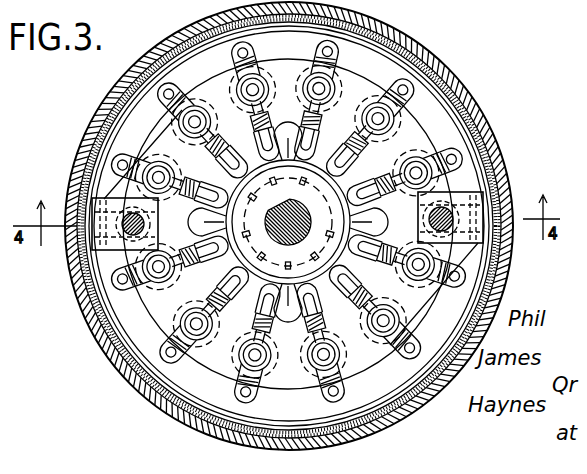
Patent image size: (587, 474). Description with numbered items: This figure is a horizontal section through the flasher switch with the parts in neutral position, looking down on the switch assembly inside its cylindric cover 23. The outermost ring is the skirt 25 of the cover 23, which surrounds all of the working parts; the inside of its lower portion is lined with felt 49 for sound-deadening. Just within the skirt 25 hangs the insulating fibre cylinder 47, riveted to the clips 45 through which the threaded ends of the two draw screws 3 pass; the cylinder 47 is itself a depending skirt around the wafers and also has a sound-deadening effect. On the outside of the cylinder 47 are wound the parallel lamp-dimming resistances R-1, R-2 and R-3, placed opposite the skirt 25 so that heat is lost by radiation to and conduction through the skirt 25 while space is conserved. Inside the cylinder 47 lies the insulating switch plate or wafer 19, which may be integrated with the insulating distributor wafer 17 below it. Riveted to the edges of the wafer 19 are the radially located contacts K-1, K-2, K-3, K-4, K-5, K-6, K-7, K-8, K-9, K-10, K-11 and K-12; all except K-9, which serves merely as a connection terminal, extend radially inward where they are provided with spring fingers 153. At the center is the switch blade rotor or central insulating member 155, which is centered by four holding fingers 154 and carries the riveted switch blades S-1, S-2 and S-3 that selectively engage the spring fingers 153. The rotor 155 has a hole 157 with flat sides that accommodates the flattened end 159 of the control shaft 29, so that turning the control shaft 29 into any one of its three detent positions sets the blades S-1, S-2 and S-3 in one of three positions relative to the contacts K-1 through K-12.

The cylindric container or cover 23 is at (143, 41).
The skirt 25 is at (113, 362).
The insulating distributor plate or wafer 17 is at (130, 118).
The insulating switch plate or wafer 19 is at (163, 131).
The insulating fibre cylinder 47 is at (440, 96).
The felt lining 49 is at (478, 118).
The lamp-dimming resistance R-1 is at (30, 95).
The lamp-dimming resistance R-2 is at (95, 128).
The lamp-dimming resistance R-3 is at (30, 122).
The contact K-1 is at (455, 160).
The contact K-2 is at (403, 95).
The contact K-3 is at (333, 51).
The contact K-4 is at (246, 51).
The contact K-5 is at (167, 96).
The contact K-6 is at (121, 166).
The contact K-7 is at (128, 285).
The contact K-8 is at (174, 350).
The contact K-9 is at (243, 392).
The contact K-10 is at (335, 393).
The contact K-11 is at (410, 349).
The contact K-12 is at (460, 274).
The spring fingers 153 is at (257, 130).
The holding fingers 154 is at (288, 326).
The switch blade rotor or central insulating member 155 is at (215, 310).
The hole 157 is at (291, 204).
The flattened end 159 is at (292, 241).
The control shaft 29 is at (268, 214).
The standards or draw screws 3 is at (290, 227).
The clips 45 is at (100, 251).
The switch blade S-1 is at (318, 128).
The switch blade S-2 is at (197, 300).
The switch blade S-3 is at (325, 312).